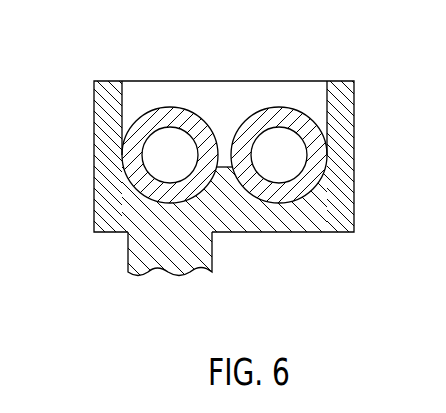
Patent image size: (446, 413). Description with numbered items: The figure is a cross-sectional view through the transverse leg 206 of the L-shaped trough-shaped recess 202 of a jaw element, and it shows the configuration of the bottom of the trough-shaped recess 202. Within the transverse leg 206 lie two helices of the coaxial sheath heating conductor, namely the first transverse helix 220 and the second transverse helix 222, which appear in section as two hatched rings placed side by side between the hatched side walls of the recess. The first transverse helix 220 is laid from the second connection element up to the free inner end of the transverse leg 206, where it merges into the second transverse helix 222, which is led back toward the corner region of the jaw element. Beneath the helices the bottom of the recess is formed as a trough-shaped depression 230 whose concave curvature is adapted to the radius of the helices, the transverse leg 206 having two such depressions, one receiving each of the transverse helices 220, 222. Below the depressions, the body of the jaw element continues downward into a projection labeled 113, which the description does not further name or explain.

The trough-shaped recess 202 is at (280, 81).
The transverse leg 206 is at (85, 140).
The first transverse helix 220 is at (143, 193).
The second transverse helix 222 is at (312, 138).
The trough-shaped depression 230 is at (151, 202).
The mounting projection 113 is at (155, 273).